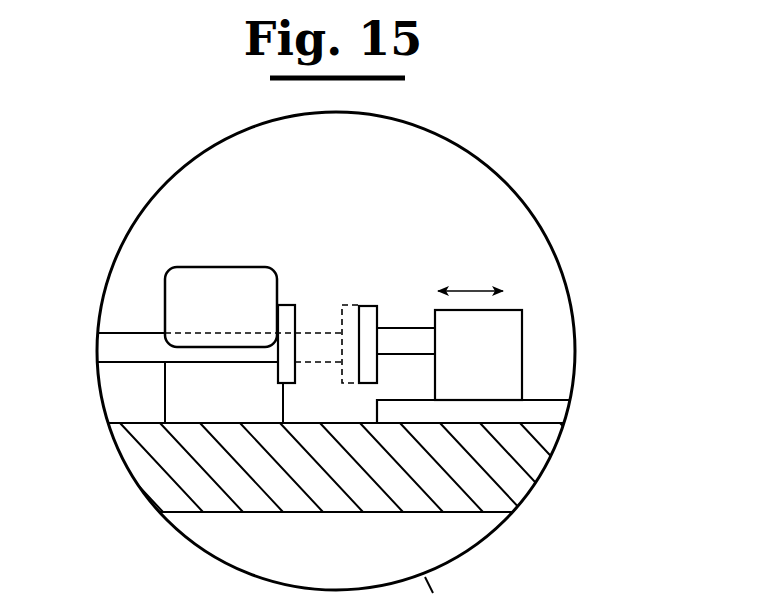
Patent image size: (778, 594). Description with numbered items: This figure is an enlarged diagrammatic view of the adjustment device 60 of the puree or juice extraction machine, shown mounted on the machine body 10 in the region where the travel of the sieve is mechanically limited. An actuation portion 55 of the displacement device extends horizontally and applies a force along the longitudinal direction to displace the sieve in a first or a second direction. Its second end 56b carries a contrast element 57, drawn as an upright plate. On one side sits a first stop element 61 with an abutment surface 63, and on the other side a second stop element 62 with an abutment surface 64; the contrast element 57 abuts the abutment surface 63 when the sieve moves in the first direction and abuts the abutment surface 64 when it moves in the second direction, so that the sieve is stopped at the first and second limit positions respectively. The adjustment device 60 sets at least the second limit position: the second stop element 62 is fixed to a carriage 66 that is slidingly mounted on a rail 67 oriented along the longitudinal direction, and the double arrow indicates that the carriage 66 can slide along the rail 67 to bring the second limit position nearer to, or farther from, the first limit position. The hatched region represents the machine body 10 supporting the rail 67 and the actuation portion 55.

The machine body 10 is at (525, 453).
The actuation portion 55 is at (150, 350).
The second end 56b is at (270, 355).
The contrast element 57 is at (301, 311).
The adjustment device 60 is at (504, 271).
The first stop element 61 is at (196, 240).
The second stop element 62 is at (370, 292).
The abutment surface 63 is at (281, 293).
The abutment surface 64 is at (357, 330).
The carriage 66 is at (524, 299).
The rail 67 is at (552, 412).